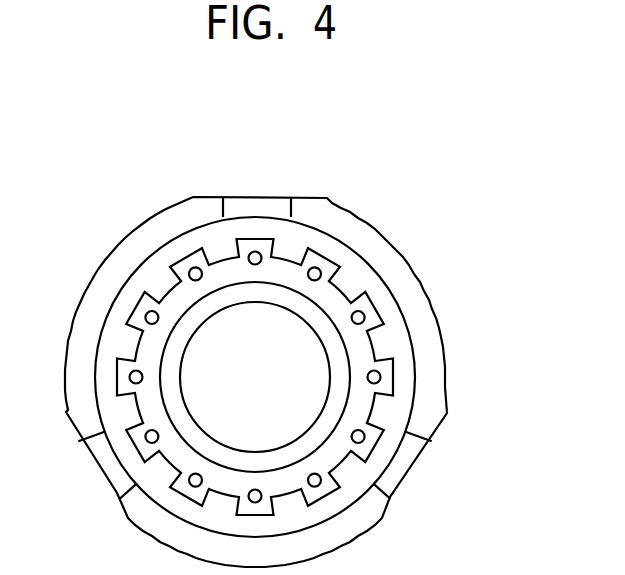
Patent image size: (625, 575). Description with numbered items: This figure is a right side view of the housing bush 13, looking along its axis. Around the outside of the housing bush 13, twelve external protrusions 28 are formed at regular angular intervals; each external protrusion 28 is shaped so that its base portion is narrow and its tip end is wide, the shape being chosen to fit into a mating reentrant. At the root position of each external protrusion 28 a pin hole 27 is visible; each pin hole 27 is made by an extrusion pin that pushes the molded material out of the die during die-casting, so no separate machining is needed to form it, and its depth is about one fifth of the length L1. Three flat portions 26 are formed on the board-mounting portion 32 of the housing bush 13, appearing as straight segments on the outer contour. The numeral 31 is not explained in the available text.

The housing bush 13 is at (270, 328).
The flat portions 26 is at (303, 196).
The pin hole 27 is at (375, 308).
The external protrusion 28 is at (381, 378).
The yoke inner surface 31 is at (353, 263).
The board-mounting portion 32 is at (340, 228).